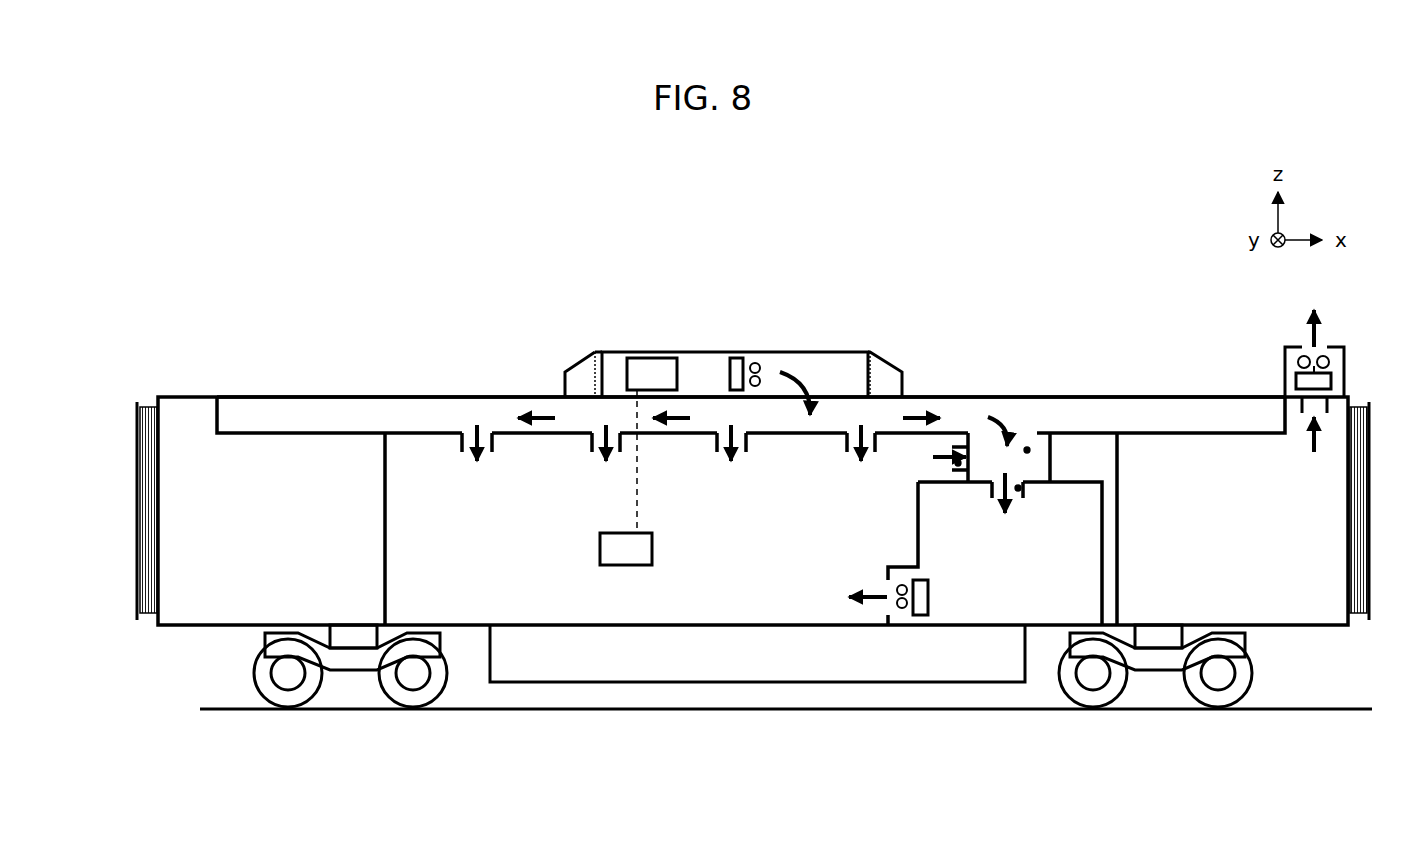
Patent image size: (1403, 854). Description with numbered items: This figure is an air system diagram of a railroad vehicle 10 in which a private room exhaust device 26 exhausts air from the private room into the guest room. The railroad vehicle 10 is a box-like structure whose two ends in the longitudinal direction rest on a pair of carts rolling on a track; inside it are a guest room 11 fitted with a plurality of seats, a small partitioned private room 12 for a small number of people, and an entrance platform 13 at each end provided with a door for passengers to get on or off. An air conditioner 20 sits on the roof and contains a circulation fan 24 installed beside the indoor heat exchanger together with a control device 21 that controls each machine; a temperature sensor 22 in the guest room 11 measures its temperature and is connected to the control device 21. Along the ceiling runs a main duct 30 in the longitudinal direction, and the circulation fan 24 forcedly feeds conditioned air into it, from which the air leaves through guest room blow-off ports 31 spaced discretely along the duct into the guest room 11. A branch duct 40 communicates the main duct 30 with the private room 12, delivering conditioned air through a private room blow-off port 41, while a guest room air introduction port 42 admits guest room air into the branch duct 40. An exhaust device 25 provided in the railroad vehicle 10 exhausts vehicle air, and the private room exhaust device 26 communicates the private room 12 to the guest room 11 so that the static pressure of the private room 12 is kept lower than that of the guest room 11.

The railroad vehicle 10 is at (1047, 285).
The guest room 11 is at (456, 609).
The private room 12 is at (1087, 609).
The entrance platform 13 is at (208, 610).
The air conditioner 20 is at (802, 350).
The control device 21 is at (658, 367).
The temperature sensor of guest room 22 is at (618, 547).
The circulation fan 24 is at (737, 363).
The exhaust device 25 is at (1304, 379).
The private room exhaust device 26 is at (927, 605).
The main duct 30 is at (413, 405).
The guest room blow-off port 31 is at (653, 455).
The branch duct 40 is at (1027, 450).
The private room blow-off port 41 is at (1018, 488).
The guest room air introduction port 42 is at (958, 463).